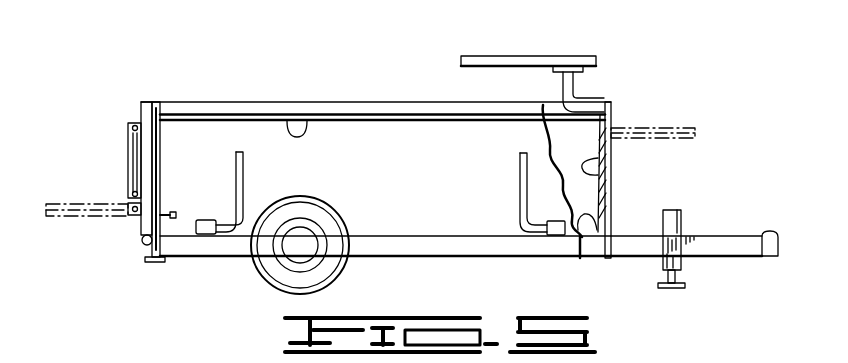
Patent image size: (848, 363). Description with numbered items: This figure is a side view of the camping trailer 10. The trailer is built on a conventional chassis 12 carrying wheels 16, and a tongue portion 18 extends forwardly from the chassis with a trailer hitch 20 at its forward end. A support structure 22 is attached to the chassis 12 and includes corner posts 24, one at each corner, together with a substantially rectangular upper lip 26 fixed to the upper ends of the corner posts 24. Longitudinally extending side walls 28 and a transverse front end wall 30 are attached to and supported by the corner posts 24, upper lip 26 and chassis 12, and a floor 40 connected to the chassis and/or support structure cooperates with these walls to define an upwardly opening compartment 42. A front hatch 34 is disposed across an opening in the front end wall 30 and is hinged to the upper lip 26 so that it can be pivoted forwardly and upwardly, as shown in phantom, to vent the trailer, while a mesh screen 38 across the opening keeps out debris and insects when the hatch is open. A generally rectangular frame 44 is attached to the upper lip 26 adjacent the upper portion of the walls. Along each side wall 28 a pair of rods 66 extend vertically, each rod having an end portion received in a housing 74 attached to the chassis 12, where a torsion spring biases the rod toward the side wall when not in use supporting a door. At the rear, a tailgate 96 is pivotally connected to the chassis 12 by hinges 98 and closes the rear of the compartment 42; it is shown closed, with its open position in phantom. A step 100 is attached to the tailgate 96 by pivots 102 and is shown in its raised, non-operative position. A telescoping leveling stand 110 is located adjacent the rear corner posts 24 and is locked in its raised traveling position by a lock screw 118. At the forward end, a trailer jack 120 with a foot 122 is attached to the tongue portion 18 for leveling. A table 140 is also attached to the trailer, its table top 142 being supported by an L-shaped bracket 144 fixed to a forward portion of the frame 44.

The camping trailer 10 is at (745, 111).
The chassis 12 is at (382, 247).
The wheels 16 is at (268, 266).
The tongue portion 18 is at (735, 244).
The trailer hitch 20 is at (771, 240).
The support structure 22 is at (376, 99).
The corner posts 24 is at (163, 120).
The upper lip 26 is at (304, 122).
The side walls 28 is at (428, 188).
The front end wall 30 is at (612, 215).
The front hatch 34 is at (656, 128).
The mesh screen 38 is at (600, 153).
The floor 40 is at (580, 259).
The compartment 42 is at (600, 112).
The frame 44 is at (612, 118).
The rod 66 is at (244, 170).
The housing 74 is at (205, 234).
The tailgate 96 is at (145, 103).
The hinges 98 is at (143, 244).
The step 100 is at (129, 198).
The pivots 102 is at (129, 208).
The telescoping leveling stand 110 is at (166, 212).
The lock screw 118 is at (152, 258).
The trailer jack 120 is at (684, 267).
The foot 122 is at (665, 289).
The table 140 is at (489, 48).
The table top 142 is at (523, 62).
The L-shaped bracket 144 is at (568, 92).